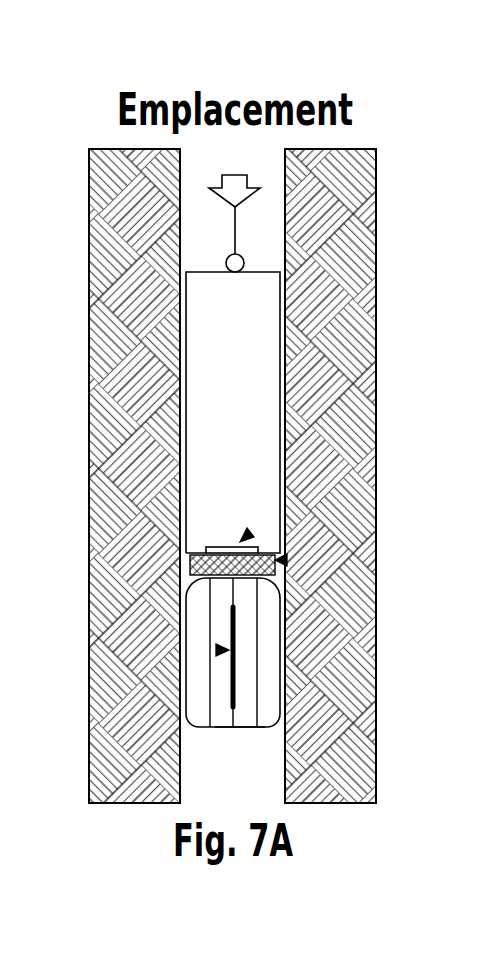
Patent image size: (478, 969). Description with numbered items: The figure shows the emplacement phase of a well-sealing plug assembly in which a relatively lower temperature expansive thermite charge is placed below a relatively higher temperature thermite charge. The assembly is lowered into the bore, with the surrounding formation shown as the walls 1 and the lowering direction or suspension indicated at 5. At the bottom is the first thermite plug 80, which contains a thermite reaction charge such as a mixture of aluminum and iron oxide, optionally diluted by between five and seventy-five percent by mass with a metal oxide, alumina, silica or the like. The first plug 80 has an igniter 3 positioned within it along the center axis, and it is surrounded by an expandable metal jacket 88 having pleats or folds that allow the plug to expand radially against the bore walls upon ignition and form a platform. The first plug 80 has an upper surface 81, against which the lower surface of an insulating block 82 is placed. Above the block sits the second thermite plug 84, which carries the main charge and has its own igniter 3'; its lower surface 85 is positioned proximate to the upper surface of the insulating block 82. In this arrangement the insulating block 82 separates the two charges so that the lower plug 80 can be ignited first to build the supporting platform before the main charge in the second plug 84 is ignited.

The rock formation / borehole wall 1 is at (97, 330).
The lowering direction / cable 5 is at (237, 231).
The second thermite plug 84 is at (263, 320).
The lower surface 85 is at (192, 556).
The upper surface 81 is at (190, 566).
The insulating block 82 is at (287, 560).
The igniter 3' is at (324, 504).
The first thermite plug 80 is at (272, 633).
The igniter 3 is at (148, 652).
The expandable metal jacket 88 is at (250, 728).